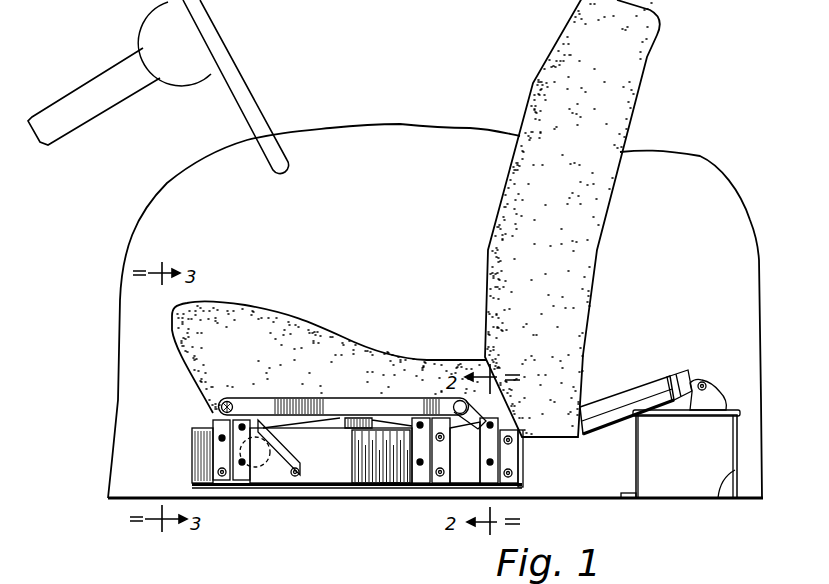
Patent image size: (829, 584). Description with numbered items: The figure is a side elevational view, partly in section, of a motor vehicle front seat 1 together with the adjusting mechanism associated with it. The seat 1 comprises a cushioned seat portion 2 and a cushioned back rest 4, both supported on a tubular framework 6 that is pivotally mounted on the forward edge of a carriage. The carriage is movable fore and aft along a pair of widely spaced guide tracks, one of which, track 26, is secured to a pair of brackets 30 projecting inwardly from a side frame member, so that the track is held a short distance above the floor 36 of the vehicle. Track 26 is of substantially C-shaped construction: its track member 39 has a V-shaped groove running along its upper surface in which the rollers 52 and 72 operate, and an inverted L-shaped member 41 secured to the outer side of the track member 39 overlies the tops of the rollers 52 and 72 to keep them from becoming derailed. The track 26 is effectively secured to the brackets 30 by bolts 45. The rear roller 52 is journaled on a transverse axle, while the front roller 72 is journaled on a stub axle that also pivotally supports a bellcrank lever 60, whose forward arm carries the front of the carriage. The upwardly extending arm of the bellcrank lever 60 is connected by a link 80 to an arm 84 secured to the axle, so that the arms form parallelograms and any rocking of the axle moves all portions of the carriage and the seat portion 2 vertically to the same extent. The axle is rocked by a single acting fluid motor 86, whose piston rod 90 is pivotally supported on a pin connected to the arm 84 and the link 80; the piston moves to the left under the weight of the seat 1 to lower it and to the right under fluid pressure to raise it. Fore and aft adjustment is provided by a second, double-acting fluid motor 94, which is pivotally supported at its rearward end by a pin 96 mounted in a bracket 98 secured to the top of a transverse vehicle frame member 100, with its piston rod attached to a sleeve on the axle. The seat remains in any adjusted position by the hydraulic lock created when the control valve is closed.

The front seat 1 is at (480, 302).
The cushioned seat portion 2 is at (250, 303).
The cushioned back rest 4 is at (505, 212).
The framework 6 is at (185, 453).
The guide track 26 is at (353, 478).
The bracket 30 is at (270, 478).
The floor 36 is at (108, 498).
The track member 39 is at (390, 483).
The inverted L-shaped member 41 is at (312, 478).
The bolt 45 is at (437, 415).
The roller 52 is at (500, 452).
The bellcrank lever 60 is at (218, 422).
The roller 72 is at (258, 420).
The link 80 is at (320, 405).
The arm 84 is at (478, 418).
The single acting fluid motor 86 is at (322, 415).
The piston rod 90 is at (385, 420).
The second fluid motor 94 is at (622, 400).
The pin 96 is at (702, 382).
The bracket 98 is at (718, 400).
The transverse vehicle frame member 100 is at (717, 498).